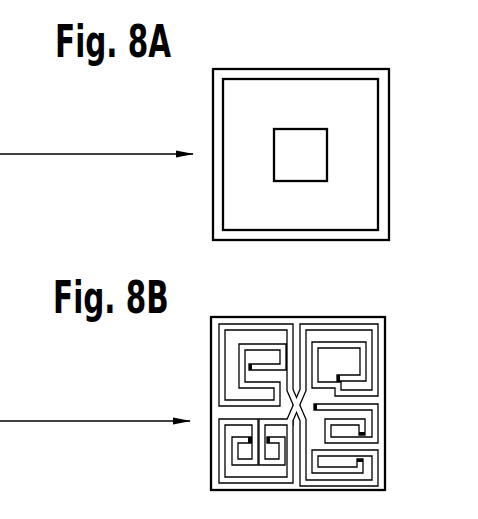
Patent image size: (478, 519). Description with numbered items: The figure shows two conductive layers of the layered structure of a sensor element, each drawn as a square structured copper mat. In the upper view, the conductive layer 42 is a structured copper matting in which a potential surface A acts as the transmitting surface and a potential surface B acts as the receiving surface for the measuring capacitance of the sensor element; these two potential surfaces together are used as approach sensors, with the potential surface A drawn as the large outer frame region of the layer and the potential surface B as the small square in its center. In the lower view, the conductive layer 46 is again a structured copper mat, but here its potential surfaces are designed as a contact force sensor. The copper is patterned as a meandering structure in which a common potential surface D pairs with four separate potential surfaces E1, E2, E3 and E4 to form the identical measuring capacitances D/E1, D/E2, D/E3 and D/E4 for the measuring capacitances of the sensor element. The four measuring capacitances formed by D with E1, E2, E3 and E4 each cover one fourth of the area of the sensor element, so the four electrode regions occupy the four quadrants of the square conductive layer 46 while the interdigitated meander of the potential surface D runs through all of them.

In FIG. 8A, the conductive layer 42 is at (383, 148).
In FIG. 8A, the potential surface A is at (303, 70).
In FIG. 8A, the potential surface B is at (310, 166).
In FIG. 8B, the conductive layer 46 is at (383, 410).
In FIG. 8B, the measuring capacitance electrode D is at (358, 355).
In FIG. 8B, the measuring capacitance electrode E1 is at (375, 382).
In FIG. 8B, the measuring capacitance electrode E2 is at (377, 445).
In FIG. 8B, the measuring capacitance electrode E3 is at (220, 388).
In FIG. 8B, the measuring capacitance electrode E4 is at (220, 458).